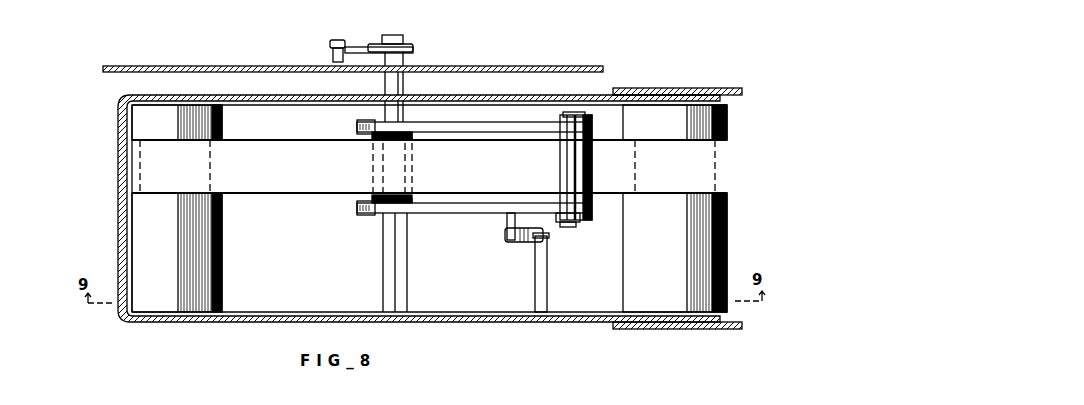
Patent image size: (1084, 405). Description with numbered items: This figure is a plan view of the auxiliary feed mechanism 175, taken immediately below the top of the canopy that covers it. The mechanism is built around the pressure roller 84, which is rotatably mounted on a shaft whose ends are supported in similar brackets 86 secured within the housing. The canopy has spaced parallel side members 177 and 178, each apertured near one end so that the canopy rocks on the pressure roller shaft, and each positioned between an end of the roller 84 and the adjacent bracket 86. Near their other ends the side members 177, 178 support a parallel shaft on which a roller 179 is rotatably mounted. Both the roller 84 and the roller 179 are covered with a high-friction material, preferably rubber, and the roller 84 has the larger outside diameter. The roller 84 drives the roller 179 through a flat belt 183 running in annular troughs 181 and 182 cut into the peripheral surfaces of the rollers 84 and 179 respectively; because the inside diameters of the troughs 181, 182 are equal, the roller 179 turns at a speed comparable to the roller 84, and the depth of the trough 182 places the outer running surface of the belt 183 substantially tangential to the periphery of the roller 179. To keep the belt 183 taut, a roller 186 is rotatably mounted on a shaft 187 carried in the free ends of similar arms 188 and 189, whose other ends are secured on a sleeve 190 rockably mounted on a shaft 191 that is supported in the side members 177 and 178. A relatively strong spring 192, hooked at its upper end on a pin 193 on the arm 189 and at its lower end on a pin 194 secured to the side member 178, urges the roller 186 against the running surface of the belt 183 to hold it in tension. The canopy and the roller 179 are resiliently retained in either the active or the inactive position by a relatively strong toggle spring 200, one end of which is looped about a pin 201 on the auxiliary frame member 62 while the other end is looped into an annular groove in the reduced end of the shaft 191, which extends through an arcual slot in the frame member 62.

The auxiliary frame member 62 is at (532, 67).
The pressure roller 84 is at (727, 233).
The bracket 86 is at (733, 87).
The auxiliary feed mechanism 175 is at (661, 75).
The side member 177 is at (598, 90).
The side member 178 is at (590, 318).
The roller 179 is at (222, 264).
The annular trough 181 is at (652, 183).
The annular trough 182 is at (158, 183).
The flat belt 183 is at (290, 151).
The roller 186 is at (565, 166).
The shaft 187 is at (570, 214).
The arm 188 is at (482, 132).
The arm 189 is at (457, 213).
The sleeve 190 is at (377, 197).
The shaft 191 is at (407, 292).
The spring 192 is at (523, 246).
The pin 193 is at (508, 224).
The pin 194 is at (547, 292).
The toggle spring 200 is at (415, 49).
The pin 201 is at (333, 42).